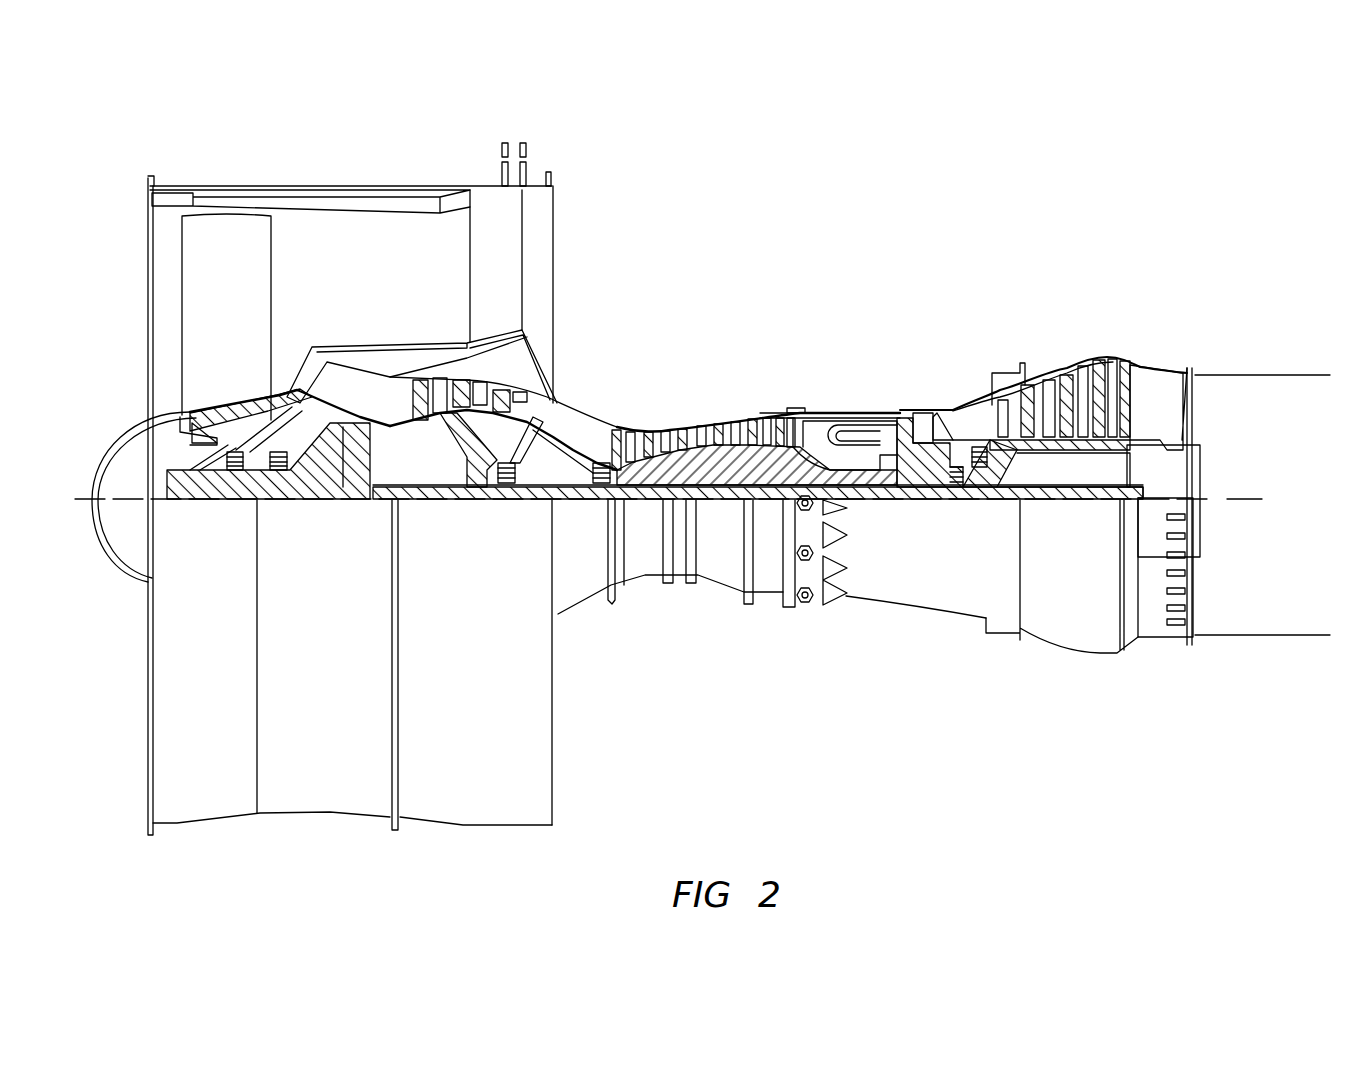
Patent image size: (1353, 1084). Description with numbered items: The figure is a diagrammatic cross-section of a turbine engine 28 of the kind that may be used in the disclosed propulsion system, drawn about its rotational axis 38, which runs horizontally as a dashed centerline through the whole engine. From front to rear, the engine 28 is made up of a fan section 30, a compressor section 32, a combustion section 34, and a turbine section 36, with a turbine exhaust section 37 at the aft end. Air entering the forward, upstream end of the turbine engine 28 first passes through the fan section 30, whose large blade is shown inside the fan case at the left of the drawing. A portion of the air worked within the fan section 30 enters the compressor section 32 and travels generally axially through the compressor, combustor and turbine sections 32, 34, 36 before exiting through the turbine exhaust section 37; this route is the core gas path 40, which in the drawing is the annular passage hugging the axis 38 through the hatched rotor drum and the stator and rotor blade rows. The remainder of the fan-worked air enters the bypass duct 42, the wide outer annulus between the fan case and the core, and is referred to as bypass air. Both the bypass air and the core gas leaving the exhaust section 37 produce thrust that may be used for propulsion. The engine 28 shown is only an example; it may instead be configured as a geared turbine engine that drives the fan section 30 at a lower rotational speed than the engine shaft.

The turbine engine 28 is at (1053, 168).
The fan section 30 is at (228, 181).
The compressor section 32 is at (793, 400).
The combustion section 34 is at (905, 395).
The turbine section 36 is at (1157, 328).
The turbine exhaust section 37 is at (1267, 439).
The rotational axis 38 is at (1245, 502).
The core gas path 40 is at (580, 417).
The bypass duct 42 is at (389, 295).